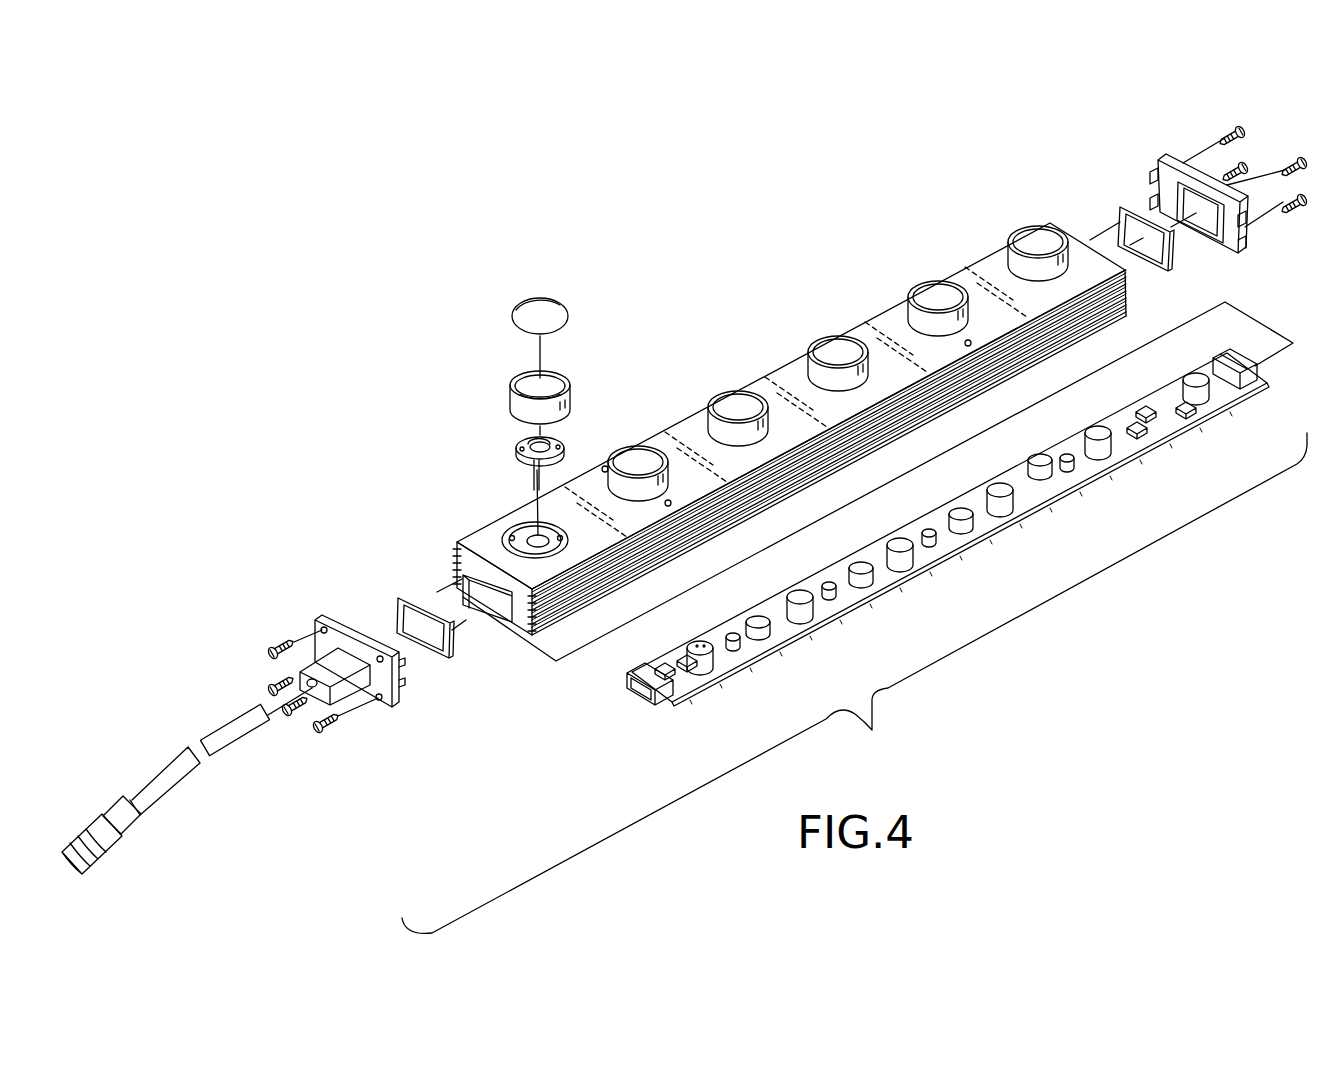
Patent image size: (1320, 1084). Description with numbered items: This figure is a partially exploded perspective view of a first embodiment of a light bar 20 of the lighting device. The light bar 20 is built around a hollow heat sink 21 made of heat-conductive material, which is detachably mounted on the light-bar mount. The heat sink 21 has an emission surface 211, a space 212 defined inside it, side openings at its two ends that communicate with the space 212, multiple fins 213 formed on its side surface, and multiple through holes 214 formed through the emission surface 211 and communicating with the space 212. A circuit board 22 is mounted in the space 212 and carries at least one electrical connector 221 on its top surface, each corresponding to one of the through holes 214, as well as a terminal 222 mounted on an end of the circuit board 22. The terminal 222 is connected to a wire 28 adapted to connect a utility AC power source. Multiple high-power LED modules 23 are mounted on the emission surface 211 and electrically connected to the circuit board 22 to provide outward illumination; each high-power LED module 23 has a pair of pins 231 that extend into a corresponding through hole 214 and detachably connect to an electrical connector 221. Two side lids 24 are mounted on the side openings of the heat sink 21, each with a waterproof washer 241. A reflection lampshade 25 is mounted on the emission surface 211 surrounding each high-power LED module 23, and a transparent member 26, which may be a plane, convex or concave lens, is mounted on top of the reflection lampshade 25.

The light bar 20 is at (530, 688).
The heat sink 21 is at (736, 451).
The emission surface 211 is at (487, 537).
The space 212 is at (473, 577).
The fins 213 is at (453, 557).
The through holes 214 is at (531, 520).
The circuit board 22 is at (918, 546).
The electrical connector 221 is at (703, 662).
The terminal 222 is at (641, 694).
The high-power LED module 23 is at (512, 437).
The pins 231 is at (536, 478).
The side lid 24 is at (347, 643).
The waterproof washer 241 is at (417, 597).
The reflection lampshade 25 is at (520, 405).
The transparent member 26 is at (522, 310).
The wire 28 is at (220, 733).